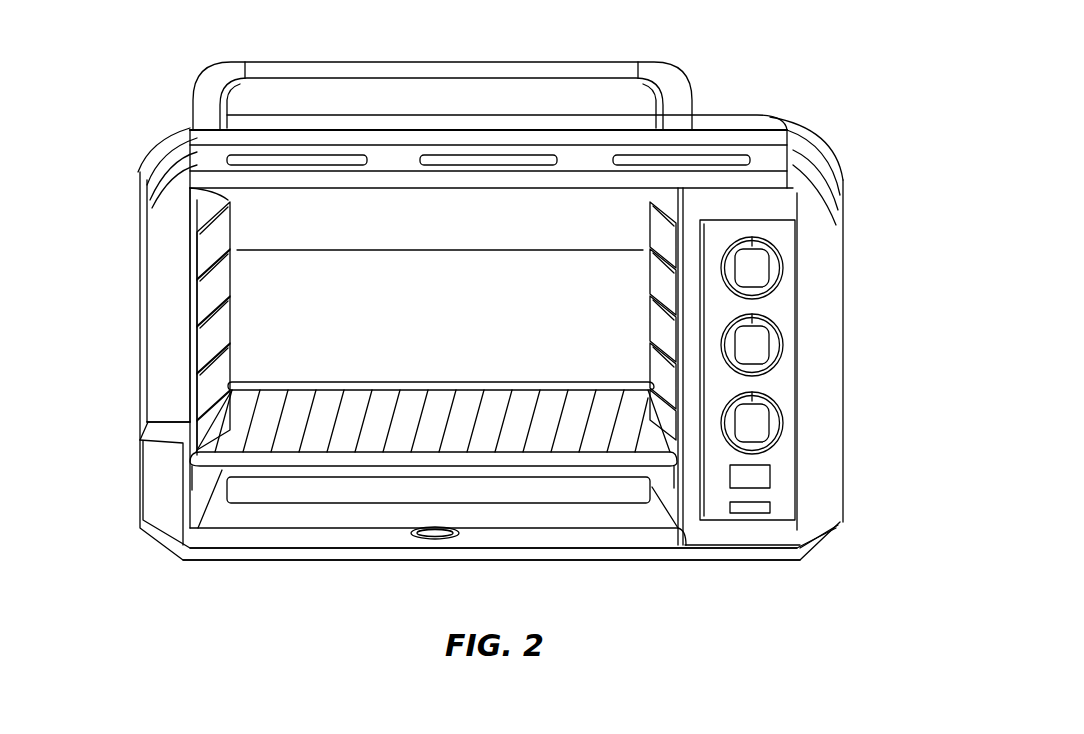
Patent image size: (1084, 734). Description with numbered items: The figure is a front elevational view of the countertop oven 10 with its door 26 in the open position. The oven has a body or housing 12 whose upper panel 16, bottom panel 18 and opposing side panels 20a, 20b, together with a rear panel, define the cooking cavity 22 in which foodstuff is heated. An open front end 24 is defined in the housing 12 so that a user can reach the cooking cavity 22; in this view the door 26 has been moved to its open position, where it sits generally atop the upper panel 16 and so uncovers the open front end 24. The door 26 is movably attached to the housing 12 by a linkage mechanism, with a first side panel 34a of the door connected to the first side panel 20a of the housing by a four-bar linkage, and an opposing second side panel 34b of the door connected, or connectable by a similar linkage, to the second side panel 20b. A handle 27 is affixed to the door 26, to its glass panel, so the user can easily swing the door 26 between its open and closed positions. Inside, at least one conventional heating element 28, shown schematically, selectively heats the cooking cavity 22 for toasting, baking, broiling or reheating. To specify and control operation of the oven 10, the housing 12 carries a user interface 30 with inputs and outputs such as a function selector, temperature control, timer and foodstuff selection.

The countertop oven 10 is at (716, 46).
The body/housing 12 is at (164, 266).
The upper panel 16 is at (712, 160).
The bottom panel 18 is at (497, 555).
The first side panel 20a is at (842, 344).
The second side panel 20b is at (146, 278).
The cooking cavity 22 is at (455, 313).
The open front end 24 is at (309, 522).
The door 26 is at (258, 142).
The handle 27 is at (325, 62).
The heating element 28 is at (578, 492).
The user interface 30 is at (781, 266).
The first side panel of the door 34a is at (848, 182).
The second side panel of the door 34b is at (138, 184).